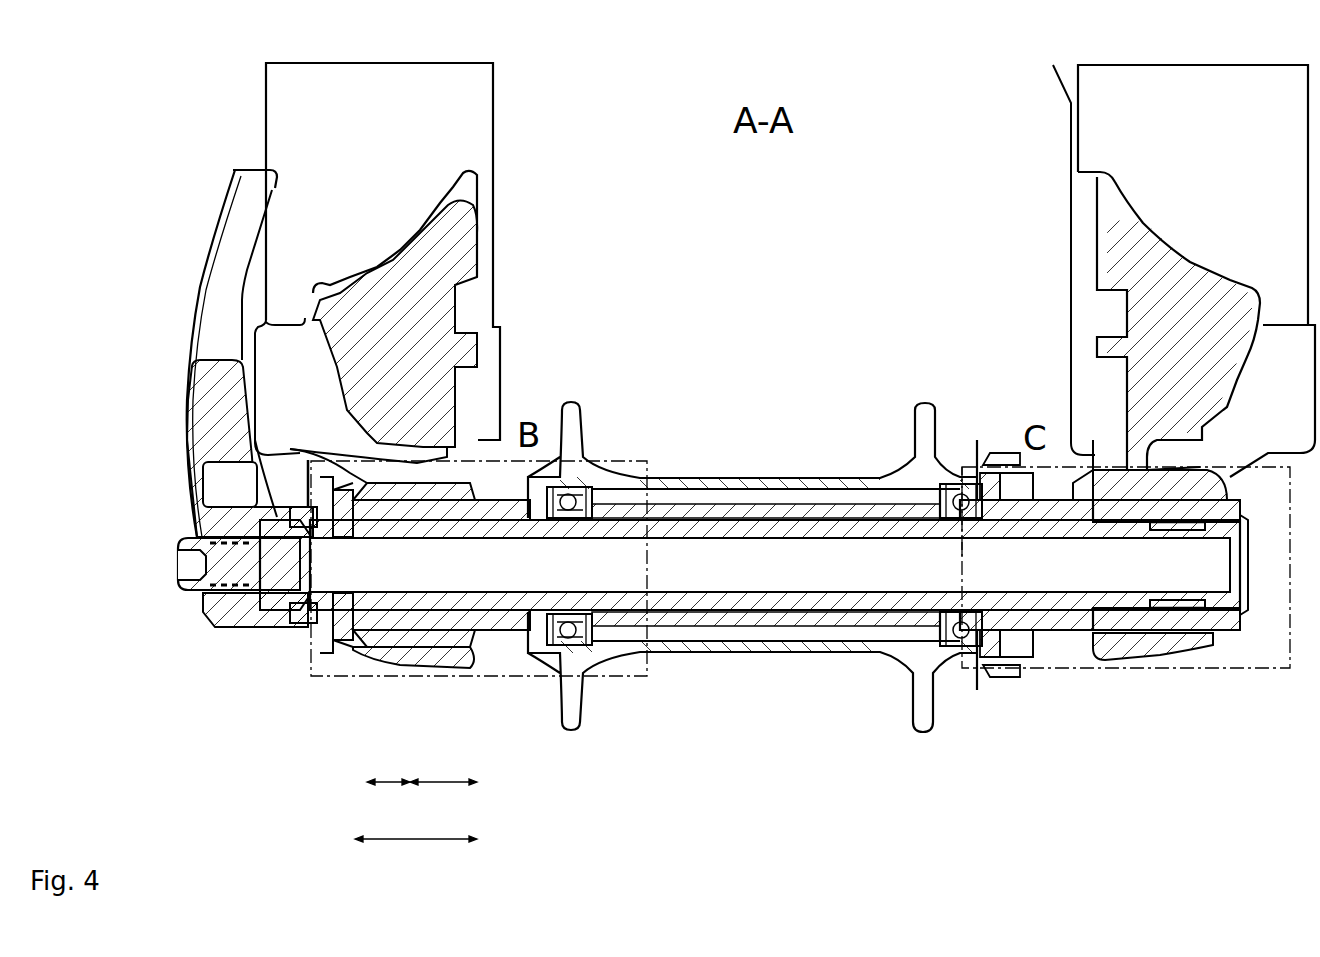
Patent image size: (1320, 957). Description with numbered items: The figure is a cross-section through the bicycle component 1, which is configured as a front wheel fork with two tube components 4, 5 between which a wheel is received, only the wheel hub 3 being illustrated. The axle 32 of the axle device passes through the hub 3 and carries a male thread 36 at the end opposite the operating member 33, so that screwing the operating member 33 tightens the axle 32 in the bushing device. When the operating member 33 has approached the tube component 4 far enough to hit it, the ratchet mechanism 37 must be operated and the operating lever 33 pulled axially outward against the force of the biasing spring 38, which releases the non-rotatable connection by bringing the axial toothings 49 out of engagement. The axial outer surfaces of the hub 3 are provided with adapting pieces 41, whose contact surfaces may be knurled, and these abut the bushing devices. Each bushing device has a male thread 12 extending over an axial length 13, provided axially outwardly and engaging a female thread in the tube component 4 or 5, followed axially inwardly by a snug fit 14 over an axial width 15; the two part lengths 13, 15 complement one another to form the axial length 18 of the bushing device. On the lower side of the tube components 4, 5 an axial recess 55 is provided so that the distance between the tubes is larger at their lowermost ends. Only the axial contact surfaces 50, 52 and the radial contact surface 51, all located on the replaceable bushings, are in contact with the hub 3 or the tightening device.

The bicycle component 1 is at (130, 78).
The wheel hub 3 is at (862, 667).
The tube component 4 is at (470, 103).
The tube component 5 is at (1118, 123).
The male thread 12 is at (377, 637).
The axial length 13 is at (391, 793).
The snug fit 14 is at (437, 638).
The axial width 15 is at (450, 793).
The axial length 18 is at (420, 843).
The axle 32 is at (787, 610).
The operating member 33 is at (223, 257).
The male thread 36 is at (1171, 527).
The ratchet mechanism 37 is at (193, 607).
The biasing spring 38 is at (223, 587).
The adapting piece 41 is at (512, 630).
The axial toothing 49 is at (273, 517).
The axial contact surface 50 is at (473, 517).
The radial contact surface 51 is at (453, 523).
The axial contact surface 52 is at (360, 623).
The axial recess 55 is at (1087, 655).